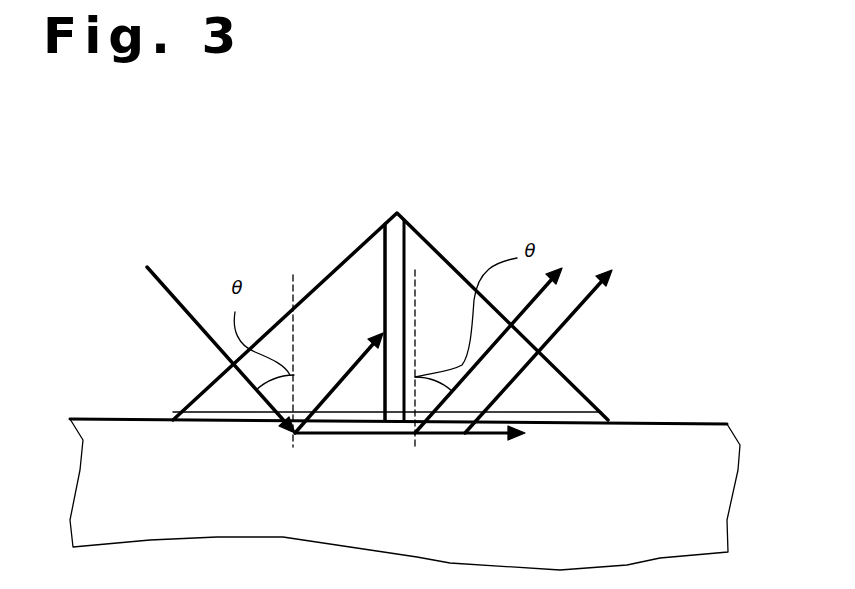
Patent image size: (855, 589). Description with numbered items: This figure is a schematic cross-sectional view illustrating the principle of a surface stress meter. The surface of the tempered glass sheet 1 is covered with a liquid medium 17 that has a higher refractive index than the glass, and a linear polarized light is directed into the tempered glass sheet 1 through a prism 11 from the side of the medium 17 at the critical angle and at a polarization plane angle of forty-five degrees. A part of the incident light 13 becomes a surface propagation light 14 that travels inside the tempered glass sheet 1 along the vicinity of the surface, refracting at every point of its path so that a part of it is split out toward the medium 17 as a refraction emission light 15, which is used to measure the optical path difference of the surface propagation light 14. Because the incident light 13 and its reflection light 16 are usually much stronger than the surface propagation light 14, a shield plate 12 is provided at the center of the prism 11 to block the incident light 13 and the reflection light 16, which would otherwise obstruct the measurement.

The tempered glass sheet 1 is at (667, 475).
The prism 11 is at (353, 287).
The shield plate 12 is at (393, 232).
The incident light 13 is at (192, 321).
The surface propagation light 14 is at (384, 425).
The refraction emission light 15 is at (538, 297).
The reflection light 16 is at (340, 383).
The liquid medium 17 is at (586, 419).